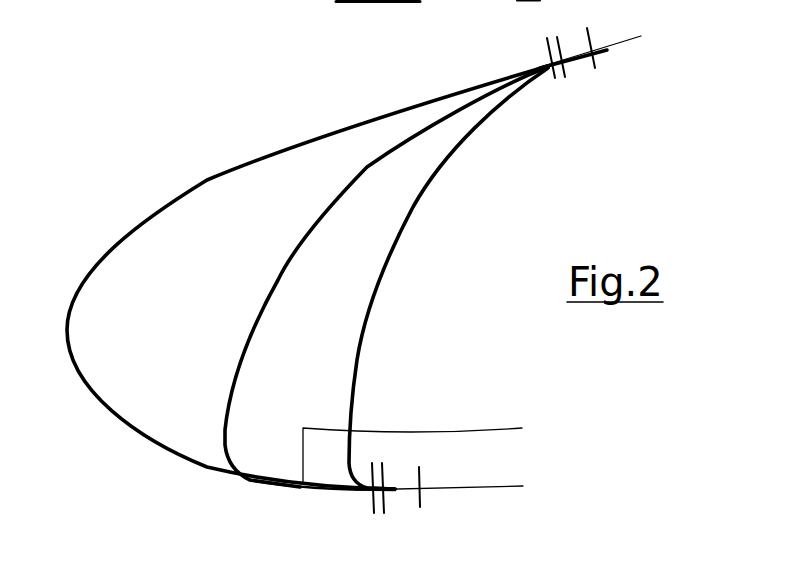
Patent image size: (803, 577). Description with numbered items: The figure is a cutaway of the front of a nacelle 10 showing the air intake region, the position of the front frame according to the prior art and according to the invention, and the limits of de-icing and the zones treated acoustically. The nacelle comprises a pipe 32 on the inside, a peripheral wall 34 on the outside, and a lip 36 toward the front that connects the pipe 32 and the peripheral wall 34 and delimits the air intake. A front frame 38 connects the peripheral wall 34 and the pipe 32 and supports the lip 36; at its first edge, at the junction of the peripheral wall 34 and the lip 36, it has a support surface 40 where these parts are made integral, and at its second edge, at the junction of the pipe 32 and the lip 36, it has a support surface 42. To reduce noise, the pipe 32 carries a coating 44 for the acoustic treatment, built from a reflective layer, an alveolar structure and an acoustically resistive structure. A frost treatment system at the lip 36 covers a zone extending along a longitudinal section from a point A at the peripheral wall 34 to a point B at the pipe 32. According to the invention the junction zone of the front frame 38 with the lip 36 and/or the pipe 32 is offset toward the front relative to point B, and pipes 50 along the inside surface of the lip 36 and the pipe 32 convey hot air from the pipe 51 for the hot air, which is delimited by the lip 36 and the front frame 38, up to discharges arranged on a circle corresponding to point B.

The blade 10 is at (663, 48).
The pipe 32 is at (523, 486).
The peripheral wall 34 is at (623, 35).
The lip 36 is at (205, 180).
The front frame 38 is at (368, 167).
The support surface 40 is at (590, 63).
The support surface 42 is at (377, 503).
The coating for the acoustic treatment 44 is at (493, 458).
The pipes 50 is at (298, 496).
The pipe for the hot air 51 is at (147, 300).
The point A is at (530, 64).
The point B is at (372, 499).